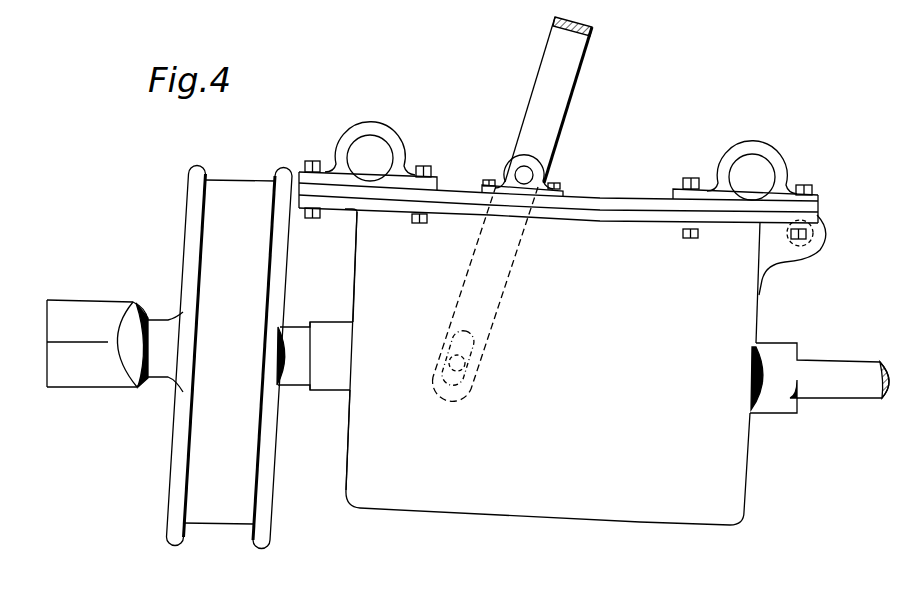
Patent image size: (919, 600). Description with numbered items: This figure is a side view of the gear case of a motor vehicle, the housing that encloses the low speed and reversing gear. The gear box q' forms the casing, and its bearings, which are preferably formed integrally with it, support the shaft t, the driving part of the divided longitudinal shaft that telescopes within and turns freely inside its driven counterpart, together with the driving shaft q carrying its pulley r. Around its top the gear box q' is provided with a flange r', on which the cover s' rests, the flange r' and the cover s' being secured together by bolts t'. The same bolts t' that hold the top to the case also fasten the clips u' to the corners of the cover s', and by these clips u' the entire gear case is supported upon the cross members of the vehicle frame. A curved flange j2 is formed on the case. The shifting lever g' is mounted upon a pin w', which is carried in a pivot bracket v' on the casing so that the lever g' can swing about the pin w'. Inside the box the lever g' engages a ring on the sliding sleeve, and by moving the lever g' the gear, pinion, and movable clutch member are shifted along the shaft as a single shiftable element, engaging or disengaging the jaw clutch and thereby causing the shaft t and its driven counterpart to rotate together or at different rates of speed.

The lever g' is at (513, 209).
The pivot bracket v' is at (516, 168).
The pin w' is at (555, 162).
The bolts t' is at (571, 196).
The clips u' is at (558, 161).
The cover s' is at (558, 197).
The flange r' is at (340, 226).
The curved flange j2 is at (812, 255).
The shaft t is at (819, 375).
The gear box q' is at (561, 368).
The driving shaft q is at (115, 361).
The pulley r is at (260, 360).